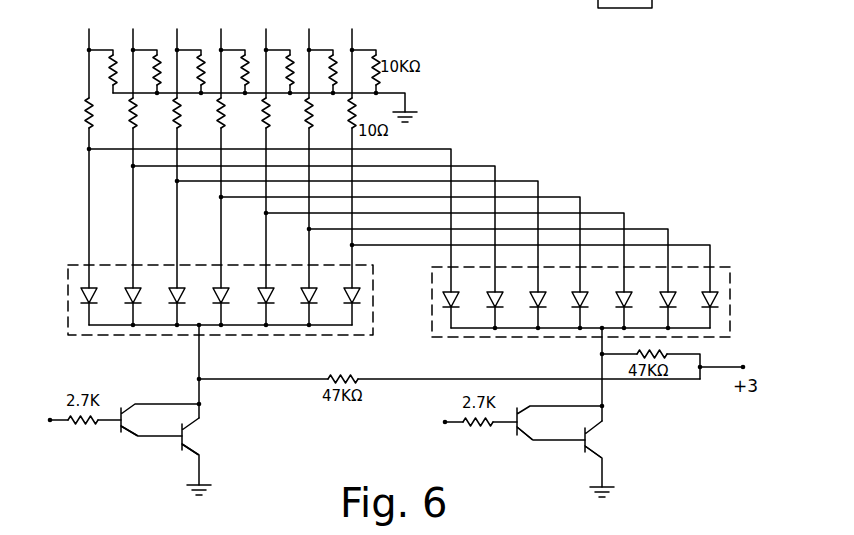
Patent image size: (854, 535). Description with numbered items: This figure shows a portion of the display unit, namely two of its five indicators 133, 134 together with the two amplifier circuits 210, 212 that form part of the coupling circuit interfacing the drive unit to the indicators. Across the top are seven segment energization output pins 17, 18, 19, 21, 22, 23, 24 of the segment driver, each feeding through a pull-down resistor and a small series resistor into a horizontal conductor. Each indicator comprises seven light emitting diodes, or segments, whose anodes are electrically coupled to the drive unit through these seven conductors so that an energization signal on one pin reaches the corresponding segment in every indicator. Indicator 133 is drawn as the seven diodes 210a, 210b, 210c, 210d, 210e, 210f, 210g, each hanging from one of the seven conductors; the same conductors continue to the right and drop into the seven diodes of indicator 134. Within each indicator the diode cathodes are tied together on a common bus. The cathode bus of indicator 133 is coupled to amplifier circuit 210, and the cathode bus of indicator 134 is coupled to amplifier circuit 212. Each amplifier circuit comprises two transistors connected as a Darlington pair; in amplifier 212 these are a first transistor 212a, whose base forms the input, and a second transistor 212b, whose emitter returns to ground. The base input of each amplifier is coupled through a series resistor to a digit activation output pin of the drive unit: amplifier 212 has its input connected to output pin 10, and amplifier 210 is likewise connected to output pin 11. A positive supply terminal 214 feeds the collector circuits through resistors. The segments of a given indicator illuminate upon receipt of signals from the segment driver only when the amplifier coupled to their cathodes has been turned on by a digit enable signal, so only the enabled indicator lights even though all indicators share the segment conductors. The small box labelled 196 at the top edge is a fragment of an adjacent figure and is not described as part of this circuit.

The segment energization output pin 17 is at (91, 26).
The segment energization output pin 18 is at (135, 26).
The segment energization output pin 19 is at (179, 26).
The segment energization output pin 21 is at (223, 26).
The segment energization output pin 22 is at (267, 26).
The segment energization output pin 23 is at (310, 26).
The segment energization output pin 24 is at (353, 26).
The indicator 133 is at (77, 262).
The indicator 134 is at (727, 264).
The amplifier circuit 210 is at (148, 447).
The light emitting diode 210a is at (82, 297).
The light emitting diode 210b is at (129, 300).
The light emitting diode 210c is at (175, 300).
The light emitting diode 210d is at (226, 300).
The light emitting diode 210e is at (270, 300).
The light emitting diode 210f is at (313, 300).
The light emitting diode 210g is at (358, 298).
The amplifier circuit 212 is at (560, 447).
The transistor 212a is at (524, 425).
The transistor 212b is at (599, 437).
The supply terminal 214 is at (746, 364).
The block (partial, from adjacent figure) 196 is at (624, 8).
The digit activation output pin 11 is at (43, 420).
The digit activation output pin 10 is at (441, 422).